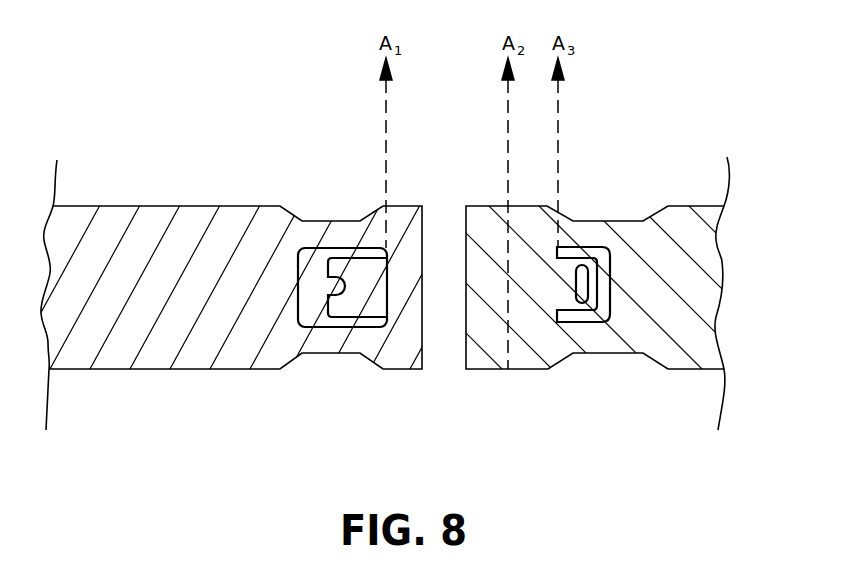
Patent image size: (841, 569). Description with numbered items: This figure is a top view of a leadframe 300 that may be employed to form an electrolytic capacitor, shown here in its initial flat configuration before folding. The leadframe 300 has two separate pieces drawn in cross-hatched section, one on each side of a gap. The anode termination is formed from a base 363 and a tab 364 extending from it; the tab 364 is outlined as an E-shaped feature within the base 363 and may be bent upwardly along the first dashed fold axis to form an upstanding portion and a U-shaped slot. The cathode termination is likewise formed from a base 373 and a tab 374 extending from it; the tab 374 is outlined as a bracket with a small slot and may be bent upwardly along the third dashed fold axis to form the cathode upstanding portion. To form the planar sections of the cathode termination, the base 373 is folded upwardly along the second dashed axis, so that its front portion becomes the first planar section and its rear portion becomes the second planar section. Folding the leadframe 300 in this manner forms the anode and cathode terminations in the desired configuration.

The leadframe 300 is at (146, 82).
The base 363 is at (232, 206).
The tab 364 is at (357, 303).
The base 373 is at (670, 225).
The tab 374 is at (585, 303).